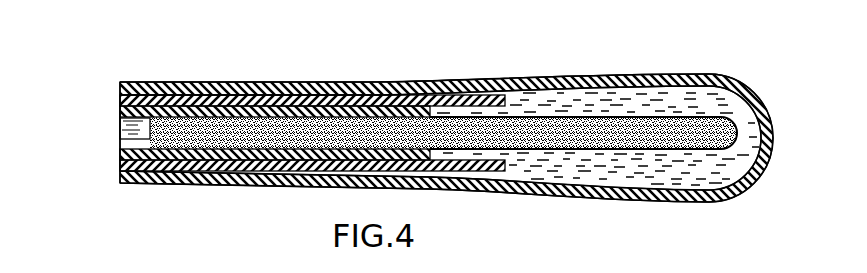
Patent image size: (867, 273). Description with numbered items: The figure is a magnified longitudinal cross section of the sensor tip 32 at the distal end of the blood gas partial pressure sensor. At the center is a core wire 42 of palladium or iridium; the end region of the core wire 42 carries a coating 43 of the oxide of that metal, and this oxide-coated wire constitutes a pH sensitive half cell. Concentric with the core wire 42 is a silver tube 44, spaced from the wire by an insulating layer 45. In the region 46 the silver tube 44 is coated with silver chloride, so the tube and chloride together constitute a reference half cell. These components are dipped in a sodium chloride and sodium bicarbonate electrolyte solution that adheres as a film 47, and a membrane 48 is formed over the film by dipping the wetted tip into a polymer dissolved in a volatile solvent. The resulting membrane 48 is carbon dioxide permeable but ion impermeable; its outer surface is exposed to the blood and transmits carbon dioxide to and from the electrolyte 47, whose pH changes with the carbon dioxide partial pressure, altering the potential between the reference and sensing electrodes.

The sensor tip 32 is at (446, 105).
The central core wire 42 is at (120, 128).
The coating 43 is at (487, 143).
The silver tube 44 is at (395, 93).
The insulating layer 45 is at (322, 106).
The region 46 is at (488, 102).
The film 47 is at (650, 180).
The membrane 48 is at (710, 87).